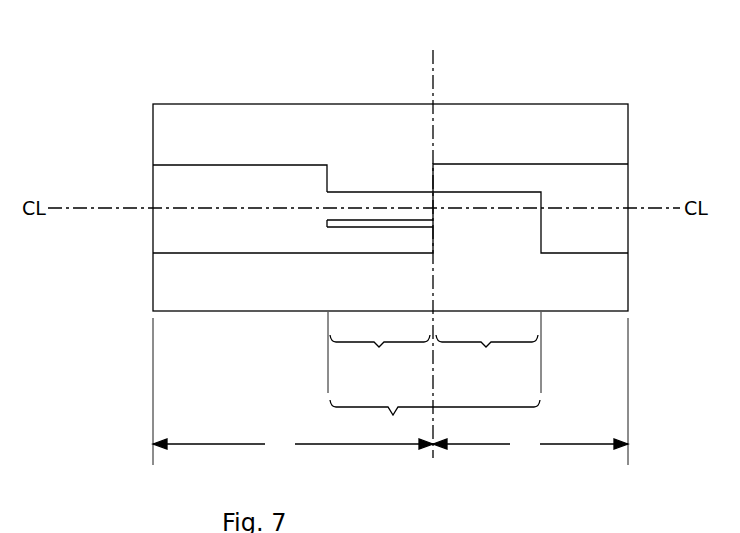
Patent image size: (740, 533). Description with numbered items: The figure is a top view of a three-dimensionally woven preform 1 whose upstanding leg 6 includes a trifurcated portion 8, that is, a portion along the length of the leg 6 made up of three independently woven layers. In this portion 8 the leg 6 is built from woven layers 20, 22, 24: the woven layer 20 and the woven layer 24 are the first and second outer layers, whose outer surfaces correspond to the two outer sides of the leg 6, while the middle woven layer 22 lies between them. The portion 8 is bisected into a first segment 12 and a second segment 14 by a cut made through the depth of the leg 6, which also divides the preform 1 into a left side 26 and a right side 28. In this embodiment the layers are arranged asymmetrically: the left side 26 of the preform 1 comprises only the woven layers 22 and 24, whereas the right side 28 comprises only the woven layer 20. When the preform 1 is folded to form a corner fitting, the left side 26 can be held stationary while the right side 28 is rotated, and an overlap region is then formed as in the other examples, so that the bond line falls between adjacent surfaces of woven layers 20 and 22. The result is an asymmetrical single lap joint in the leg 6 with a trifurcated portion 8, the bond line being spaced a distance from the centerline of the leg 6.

The 3D woven preform 1 is at (172, 104).
The upstanding leg 6 is at (171, 228).
The trifurcated portion 8 is at (435, 419).
The first segment 12 is at (380, 354).
The second segment 14 is at (487, 354).
The woven layer 20 is at (482, 173).
The middle woven layer 22 is at (356, 197).
The woven layer 24 is at (348, 246).
The left side 26 is at (293, 444).
The right side 28 is at (530, 444).